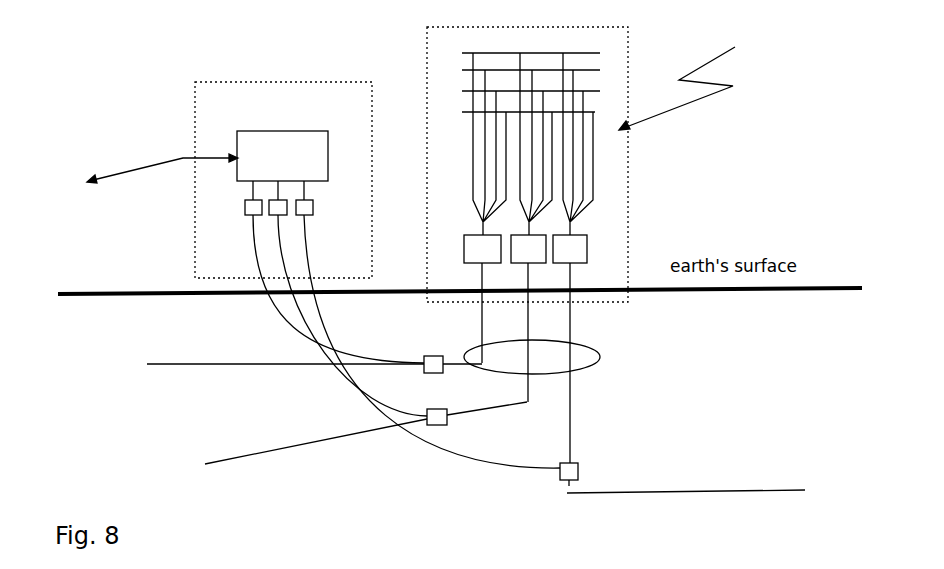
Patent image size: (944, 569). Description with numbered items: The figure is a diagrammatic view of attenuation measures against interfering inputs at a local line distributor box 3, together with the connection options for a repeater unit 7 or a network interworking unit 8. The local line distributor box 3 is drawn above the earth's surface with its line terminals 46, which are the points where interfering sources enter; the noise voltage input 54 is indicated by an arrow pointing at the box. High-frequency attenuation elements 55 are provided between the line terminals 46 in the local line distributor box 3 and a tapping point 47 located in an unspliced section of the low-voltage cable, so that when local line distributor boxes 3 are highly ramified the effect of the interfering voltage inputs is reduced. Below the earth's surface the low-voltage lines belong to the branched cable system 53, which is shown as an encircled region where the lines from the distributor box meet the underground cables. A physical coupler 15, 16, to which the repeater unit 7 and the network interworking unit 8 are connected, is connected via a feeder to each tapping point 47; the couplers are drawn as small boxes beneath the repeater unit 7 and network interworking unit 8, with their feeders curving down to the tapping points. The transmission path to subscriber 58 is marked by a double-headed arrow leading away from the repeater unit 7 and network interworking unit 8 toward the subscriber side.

The local line distributor box 3 is at (620, 61).
The repeater unit 7 is at (243, 117).
The network interworking unit 8 is at (250, 138).
The physical coupler of repeater unit 15 is at (220, 205).
The physical coupler of network interworking unit 16 is at (245, 204).
The line terminal 46 is at (593, 147).
The tapping point 47 is at (578, 463).
The branched cable system 53 is at (585, 355).
The noise voltage input 54 is at (682, 106).
The attenuation element 55 is at (580, 242).
The transmission path to subscriber 58 is at (149, 172).